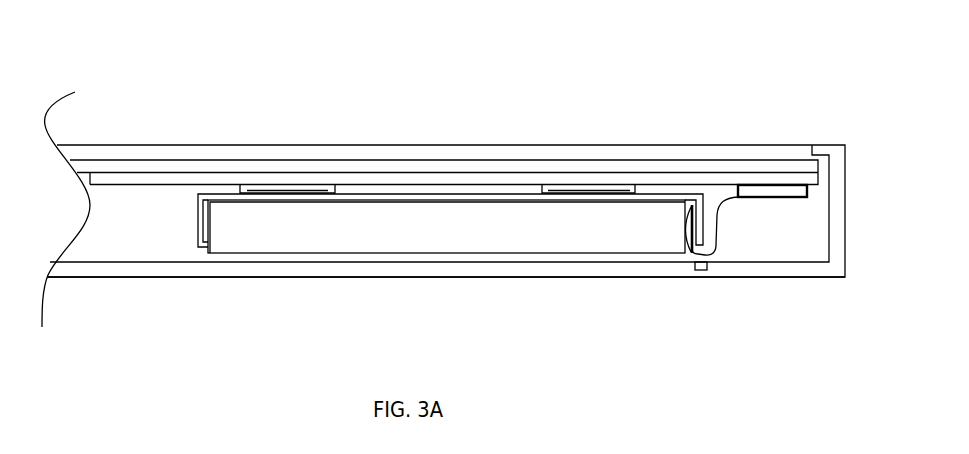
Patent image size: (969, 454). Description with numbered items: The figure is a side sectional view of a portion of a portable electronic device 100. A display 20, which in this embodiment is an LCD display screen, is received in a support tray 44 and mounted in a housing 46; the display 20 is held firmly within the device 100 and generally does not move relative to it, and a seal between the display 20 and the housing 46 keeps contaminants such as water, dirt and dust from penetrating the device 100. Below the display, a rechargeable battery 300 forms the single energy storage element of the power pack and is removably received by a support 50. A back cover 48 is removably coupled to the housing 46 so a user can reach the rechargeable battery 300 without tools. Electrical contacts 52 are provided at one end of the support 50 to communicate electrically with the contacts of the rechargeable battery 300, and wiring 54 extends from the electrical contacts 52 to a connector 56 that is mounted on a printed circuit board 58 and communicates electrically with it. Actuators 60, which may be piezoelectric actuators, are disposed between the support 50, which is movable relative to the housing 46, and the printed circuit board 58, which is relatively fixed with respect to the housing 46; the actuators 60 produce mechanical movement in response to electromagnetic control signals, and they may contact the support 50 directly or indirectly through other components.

The portable electronic device 100 is at (245, 95).
The display 20 is at (603, 157).
The support tray 44 is at (708, 172).
The housing 46 is at (253, 278).
The back cover 48 is at (595, 268).
The support 50 is at (200, 242).
The rechargeable battery 300 is at (370, 227).
The printed circuit board 58 is at (480, 187).
The actuators 60 is at (593, 190).
The electrical contacts 52 is at (687, 240).
The wiring 54 is at (715, 230).
The connector 56 is at (775, 192).